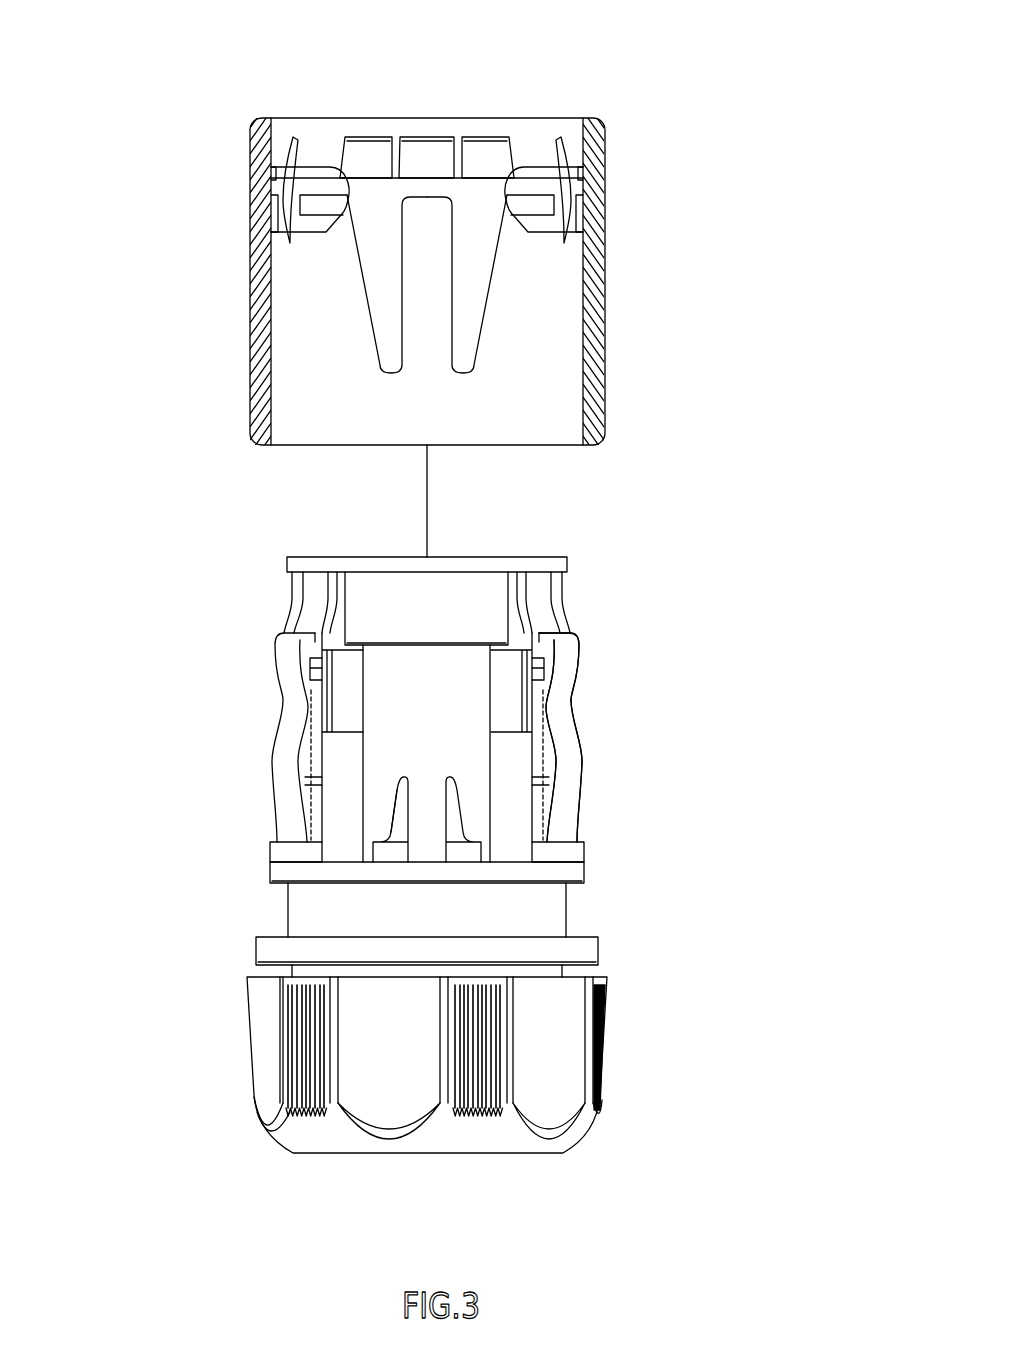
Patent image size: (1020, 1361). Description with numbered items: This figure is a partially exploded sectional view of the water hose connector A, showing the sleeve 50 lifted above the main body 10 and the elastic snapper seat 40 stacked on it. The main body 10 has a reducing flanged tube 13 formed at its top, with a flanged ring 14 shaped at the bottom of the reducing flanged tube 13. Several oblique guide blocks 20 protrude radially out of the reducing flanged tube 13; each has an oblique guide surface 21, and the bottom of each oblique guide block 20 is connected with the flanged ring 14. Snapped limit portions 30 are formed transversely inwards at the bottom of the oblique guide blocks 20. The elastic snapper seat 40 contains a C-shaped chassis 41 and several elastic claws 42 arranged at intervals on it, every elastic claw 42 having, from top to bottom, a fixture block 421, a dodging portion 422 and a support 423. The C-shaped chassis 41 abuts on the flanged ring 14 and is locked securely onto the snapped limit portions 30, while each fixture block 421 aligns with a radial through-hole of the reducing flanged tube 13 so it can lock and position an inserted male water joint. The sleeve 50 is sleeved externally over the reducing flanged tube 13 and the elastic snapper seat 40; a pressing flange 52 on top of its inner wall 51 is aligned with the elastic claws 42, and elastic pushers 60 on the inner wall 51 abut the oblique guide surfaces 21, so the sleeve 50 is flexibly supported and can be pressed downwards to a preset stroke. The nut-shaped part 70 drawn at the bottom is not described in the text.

The water hose connector A is at (752, 125).
The main body 10 is at (461, 760).
The reducing flanged tube 13 is at (393, 703).
The flanged ring 14 is at (587, 872).
The oblique guide blocks 20 is at (400, 823).
The oblique guide surface 21 is at (397, 810).
The snapped limit portions 30 is at (393, 852).
The elastic snapper seat 40 is at (528, 747).
The C-shaped chassis 41 is at (582, 847).
The elastic claws 42 is at (499, 737).
The fixture block 421 is at (537, 652).
The dodging portion 422 is at (573, 707).
The support 423 is at (570, 803).
The sleeve 50 is at (395, 310).
The inner wall 51 is at (588, 333).
The pressing flange 52 is at (323, 198).
The elastic pushers 60 is at (458, 320).
The nut 70 is at (236, 1060).